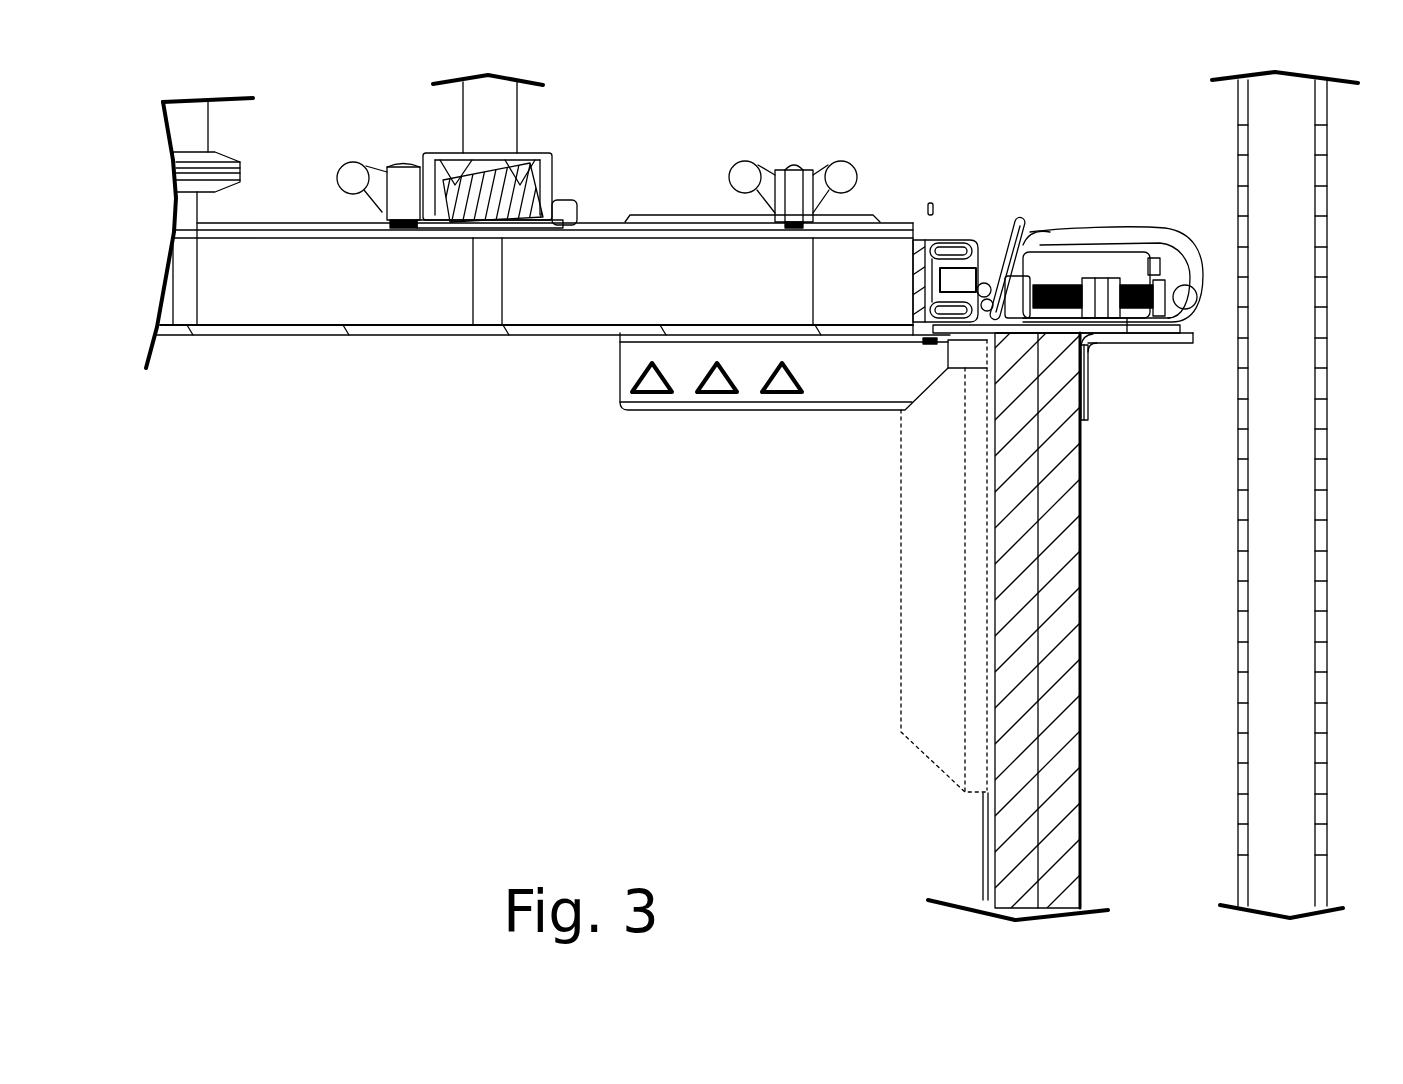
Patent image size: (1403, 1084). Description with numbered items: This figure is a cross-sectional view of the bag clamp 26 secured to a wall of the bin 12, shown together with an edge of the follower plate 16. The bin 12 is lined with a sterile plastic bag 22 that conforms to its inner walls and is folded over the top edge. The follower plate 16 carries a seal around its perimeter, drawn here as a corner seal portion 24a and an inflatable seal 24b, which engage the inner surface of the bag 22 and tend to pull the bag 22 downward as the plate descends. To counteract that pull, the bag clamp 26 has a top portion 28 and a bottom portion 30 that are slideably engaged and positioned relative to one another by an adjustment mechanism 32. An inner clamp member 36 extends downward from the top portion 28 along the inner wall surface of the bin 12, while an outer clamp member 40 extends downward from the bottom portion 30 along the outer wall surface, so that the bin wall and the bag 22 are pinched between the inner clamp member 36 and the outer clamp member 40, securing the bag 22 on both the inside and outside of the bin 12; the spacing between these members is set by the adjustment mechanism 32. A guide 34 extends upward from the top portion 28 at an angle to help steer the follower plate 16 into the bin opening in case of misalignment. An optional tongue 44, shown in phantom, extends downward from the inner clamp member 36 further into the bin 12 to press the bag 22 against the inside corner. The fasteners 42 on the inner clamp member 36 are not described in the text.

The bin 12 is at (919, 626).
The follower plate 16 is at (420, 335).
The bag 22 is at (1085, 387).
The corner seal portion 24a is at (993, 275).
The inflatable seal 24b is at (982, 237).
The bag clamp 26 is at (1137, 147).
The top portion 28 is at (1128, 333).
The bottom portion 30 is at (1142, 345).
The adjustment mechanism 32 is at (1172, 227).
The guide 34 is at (1010, 257).
The inner clamp member 36 is at (988, 378).
The outer clamp member 40 is at (1087, 387).
The fasteners 42 is at (652, 376).
The tongue 44 is at (930, 568).